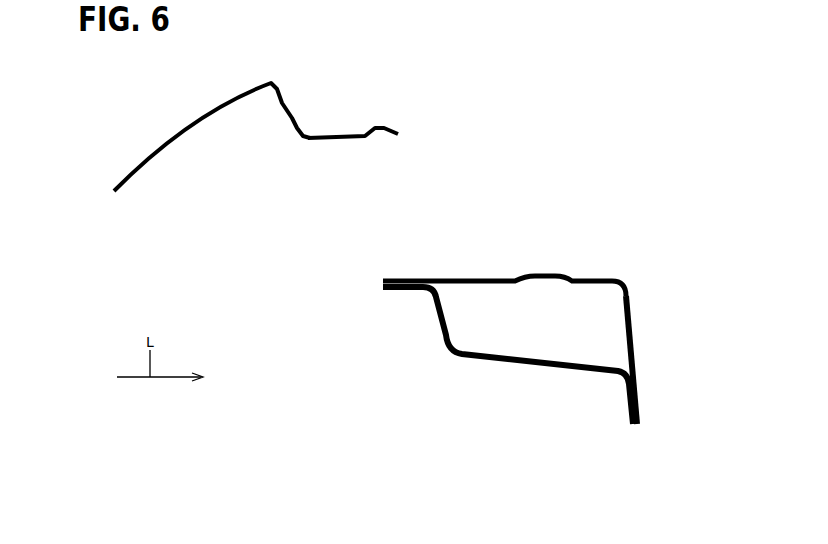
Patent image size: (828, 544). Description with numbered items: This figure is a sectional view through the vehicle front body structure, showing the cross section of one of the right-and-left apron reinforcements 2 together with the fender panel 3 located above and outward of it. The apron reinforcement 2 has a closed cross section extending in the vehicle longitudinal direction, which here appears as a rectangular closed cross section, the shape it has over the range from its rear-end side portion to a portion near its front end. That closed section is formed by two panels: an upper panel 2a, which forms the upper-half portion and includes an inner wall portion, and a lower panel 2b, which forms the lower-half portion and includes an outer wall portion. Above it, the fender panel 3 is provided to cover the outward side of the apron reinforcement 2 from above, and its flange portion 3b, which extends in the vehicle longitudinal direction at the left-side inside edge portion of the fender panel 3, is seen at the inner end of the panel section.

The apron reinforcement 2 is at (530, 314).
The upper panel 2a is at (633, 322).
The lower panel 2b is at (482, 358).
The fender panel 3 is at (256, 136).
The flange portion 3b is at (345, 133).